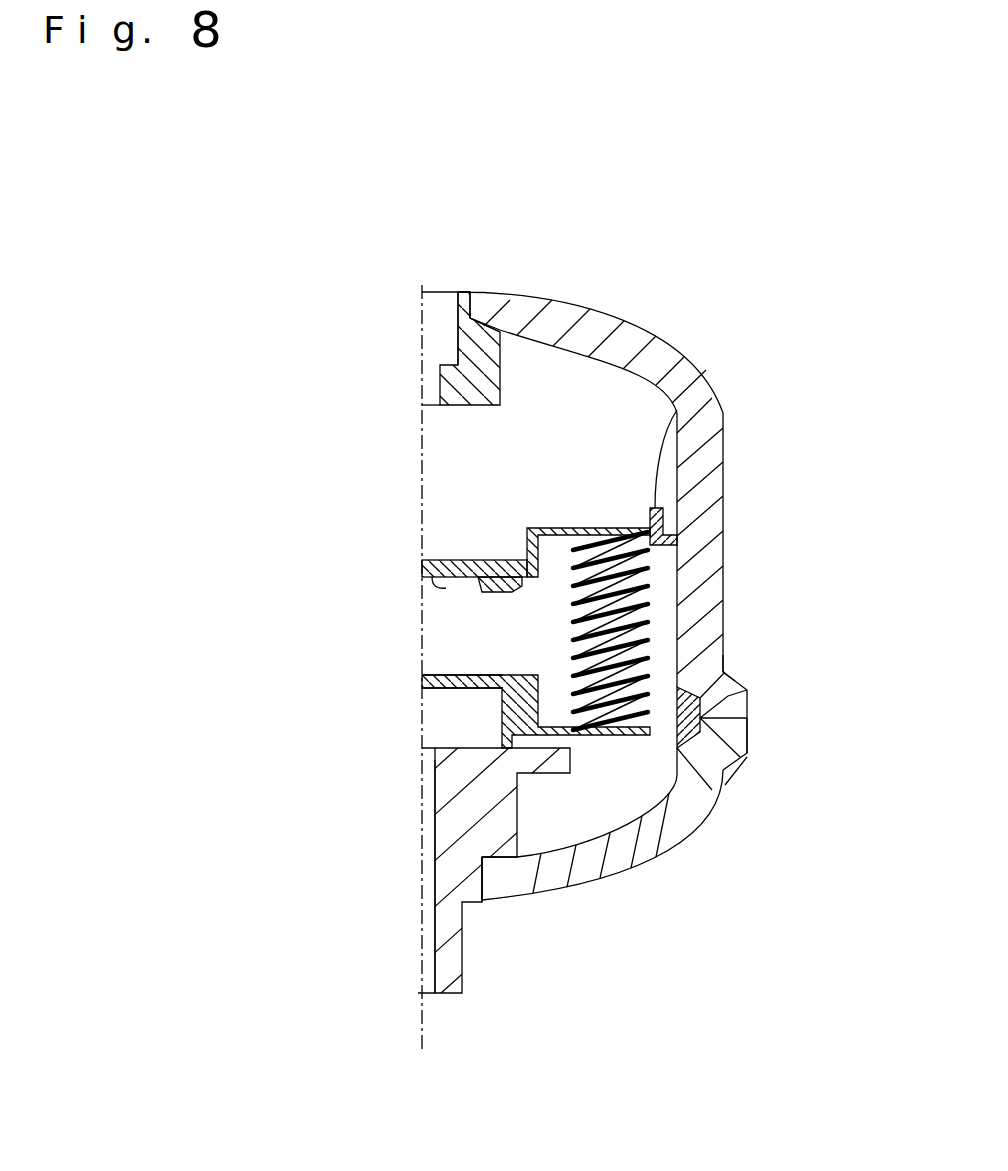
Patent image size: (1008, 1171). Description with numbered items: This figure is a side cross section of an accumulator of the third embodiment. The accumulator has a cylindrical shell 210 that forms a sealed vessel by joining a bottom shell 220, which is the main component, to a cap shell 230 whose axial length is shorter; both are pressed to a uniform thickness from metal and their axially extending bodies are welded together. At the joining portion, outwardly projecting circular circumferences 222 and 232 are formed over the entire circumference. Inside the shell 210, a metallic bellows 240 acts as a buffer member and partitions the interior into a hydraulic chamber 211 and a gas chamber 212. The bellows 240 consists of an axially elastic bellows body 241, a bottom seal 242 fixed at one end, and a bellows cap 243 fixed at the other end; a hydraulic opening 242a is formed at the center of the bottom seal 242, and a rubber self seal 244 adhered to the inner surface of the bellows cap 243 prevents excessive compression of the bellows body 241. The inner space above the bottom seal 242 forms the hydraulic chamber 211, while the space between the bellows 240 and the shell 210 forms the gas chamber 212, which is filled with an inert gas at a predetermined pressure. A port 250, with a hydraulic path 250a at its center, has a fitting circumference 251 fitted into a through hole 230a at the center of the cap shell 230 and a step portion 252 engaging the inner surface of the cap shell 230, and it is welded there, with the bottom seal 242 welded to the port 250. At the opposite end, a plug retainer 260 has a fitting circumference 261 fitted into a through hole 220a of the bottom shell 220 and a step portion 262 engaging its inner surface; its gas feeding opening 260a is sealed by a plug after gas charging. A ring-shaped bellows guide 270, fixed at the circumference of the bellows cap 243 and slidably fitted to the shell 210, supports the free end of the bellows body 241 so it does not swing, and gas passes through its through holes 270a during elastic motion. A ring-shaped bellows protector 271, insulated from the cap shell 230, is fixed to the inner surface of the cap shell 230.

The shell 210 is at (666, 612).
The hydraulic chamber 211 is at (460, 630).
The gas chamber 212 is at (602, 321).
The bottom shell 220 is at (725, 510).
The through hole 220a is at (458, 292).
The circular circumference 222 is at (748, 703).
The cap shell 230 is at (648, 872).
The through hole 230a is at (482, 872).
The circular circumference 232 is at (748, 727).
The bellows 240 is at (551, 631).
The bellows body 241 is at (647, 576).
The bottom seal 242 is at (551, 747).
The hydraulic opening 242a is at (437, 688).
The bellows cap 243 is at (606, 528).
The self seal 244 is at (432, 588).
The port 250 is at (480, 848).
The hydraulic path 250a is at (438, 892).
The fitting circumference 251 is at (485, 862).
The step portion 252 is at (545, 880).
The plug retainer 260 is at (467, 347).
The gas feeding opening 260a is at (472, 322).
The fitting circumference 261 is at (485, 332).
The step portion 262 is at (488, 328).
The bellows guide 270 is at (724, 410).
The through hole 270a is at (670, 527).
The bellows protector 271 is at (725, 665).